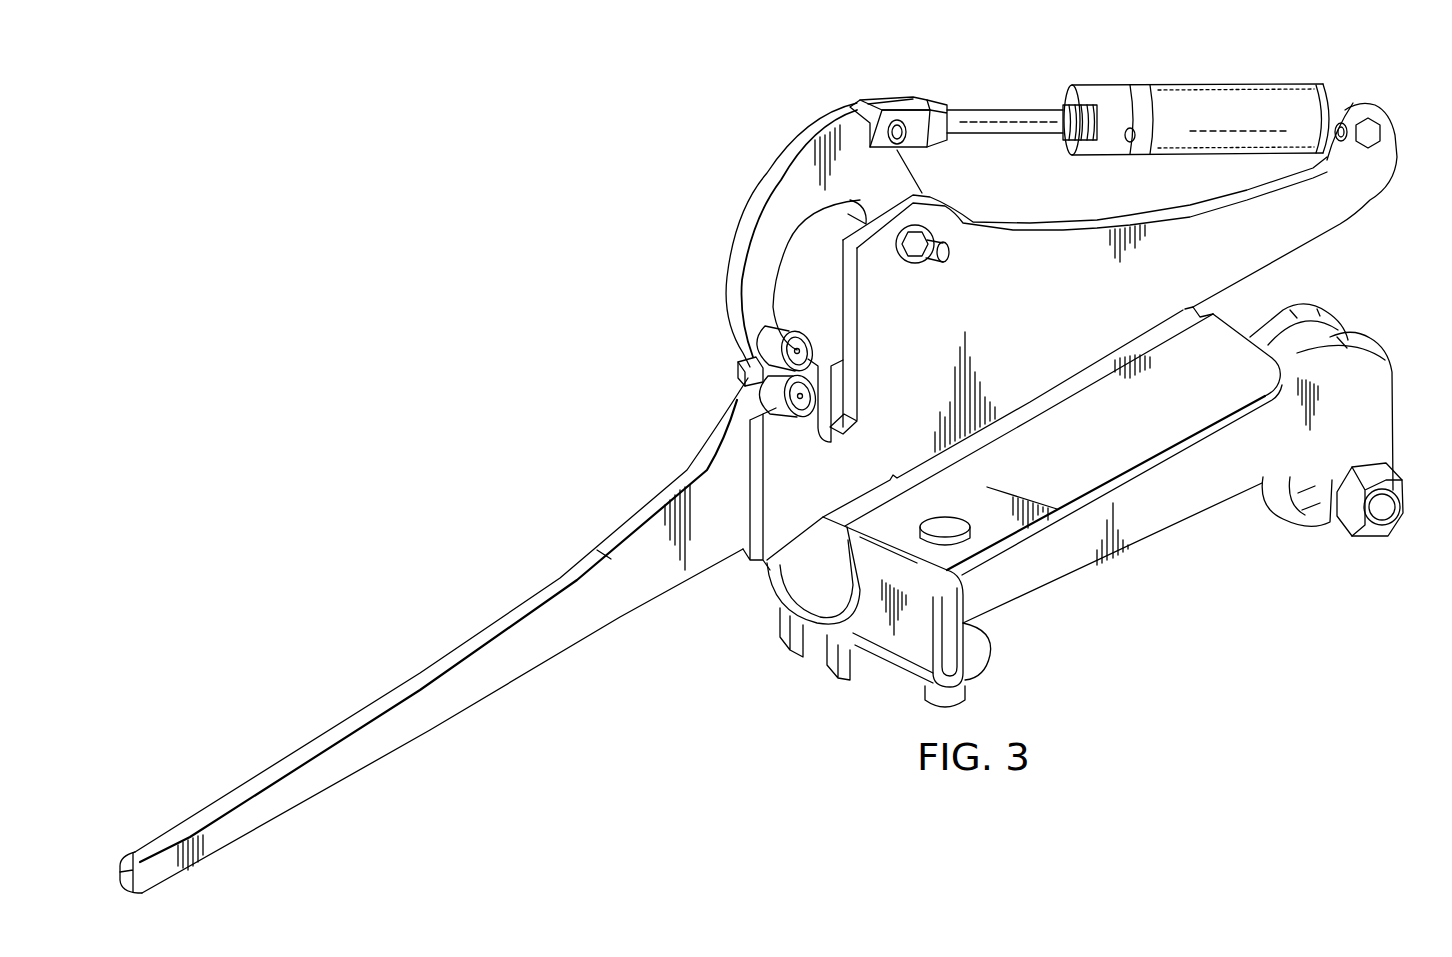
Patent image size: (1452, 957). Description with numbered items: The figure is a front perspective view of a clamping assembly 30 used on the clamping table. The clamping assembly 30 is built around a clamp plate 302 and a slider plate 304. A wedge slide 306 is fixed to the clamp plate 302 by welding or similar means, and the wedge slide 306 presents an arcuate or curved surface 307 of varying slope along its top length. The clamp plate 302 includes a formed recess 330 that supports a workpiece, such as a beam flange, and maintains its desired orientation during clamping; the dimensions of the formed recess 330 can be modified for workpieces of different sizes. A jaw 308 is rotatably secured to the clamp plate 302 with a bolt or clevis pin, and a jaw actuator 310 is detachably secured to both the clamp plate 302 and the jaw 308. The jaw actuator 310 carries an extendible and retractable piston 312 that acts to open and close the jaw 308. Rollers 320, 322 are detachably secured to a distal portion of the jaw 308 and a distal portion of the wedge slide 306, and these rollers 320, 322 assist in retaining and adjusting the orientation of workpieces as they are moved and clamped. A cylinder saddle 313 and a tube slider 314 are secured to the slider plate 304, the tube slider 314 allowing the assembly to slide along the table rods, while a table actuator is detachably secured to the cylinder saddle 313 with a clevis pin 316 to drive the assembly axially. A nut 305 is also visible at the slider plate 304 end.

The clamping assembly 30 is at (540, 155).
The clamp plate 302 is at (1367, 190).
The slider plate 304 is at (1197, 508).
The pivot nut 305 is at (1380, 540).
The wedge slide 306 is at (360, 757).
The arcuate or curved surface 307 is at (403, 683).
The jaw 308 is at (790, 163).
The jaw actuator 310 is at (1237, 84).
The piston 312 is at (1000, 108).
The cylinder saddle 313 is at (1073, 410).
The tube slider 314 is at (777, 588).
The clevis pin 316 is at (967, 688).
The roller 320 is at (748, 342).
The roller 322 is at (815, 415).
The formed recess 330 is at (830, 352).